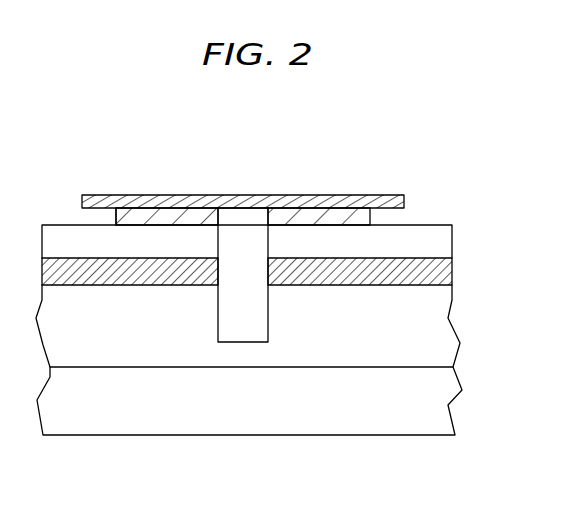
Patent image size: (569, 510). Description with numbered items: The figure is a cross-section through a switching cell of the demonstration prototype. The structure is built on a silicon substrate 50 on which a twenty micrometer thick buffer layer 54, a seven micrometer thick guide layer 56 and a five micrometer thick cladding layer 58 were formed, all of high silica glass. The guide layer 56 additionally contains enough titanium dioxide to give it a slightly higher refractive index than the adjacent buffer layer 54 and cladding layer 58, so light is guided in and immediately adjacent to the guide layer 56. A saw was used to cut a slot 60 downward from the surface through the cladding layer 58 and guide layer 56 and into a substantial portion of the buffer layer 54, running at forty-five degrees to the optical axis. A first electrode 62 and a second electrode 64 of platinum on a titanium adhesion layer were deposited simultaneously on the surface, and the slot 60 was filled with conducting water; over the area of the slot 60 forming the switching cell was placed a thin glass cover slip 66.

The silicon substrate 50 is at (460, 390).
The buffer layer 54 is at (452, 318).
The guide layer 56 is at (452, 270).
The cladding layer 58 is at (440, 243).
The slot 60 is at (243, 223).
The first electrode 62 is at (372, 216).
The second electrode 64 is at (115, 215).
The glass cover slip 66 is at (362, 195).